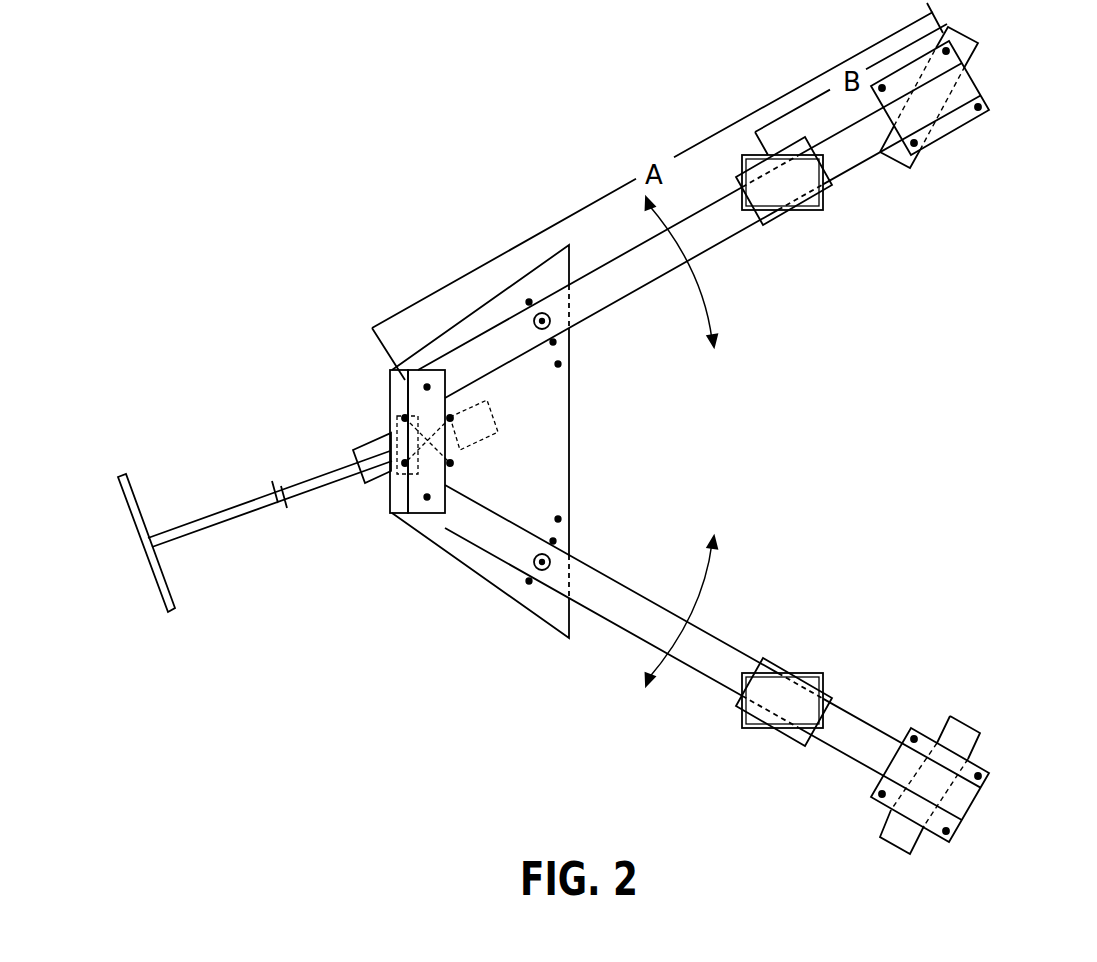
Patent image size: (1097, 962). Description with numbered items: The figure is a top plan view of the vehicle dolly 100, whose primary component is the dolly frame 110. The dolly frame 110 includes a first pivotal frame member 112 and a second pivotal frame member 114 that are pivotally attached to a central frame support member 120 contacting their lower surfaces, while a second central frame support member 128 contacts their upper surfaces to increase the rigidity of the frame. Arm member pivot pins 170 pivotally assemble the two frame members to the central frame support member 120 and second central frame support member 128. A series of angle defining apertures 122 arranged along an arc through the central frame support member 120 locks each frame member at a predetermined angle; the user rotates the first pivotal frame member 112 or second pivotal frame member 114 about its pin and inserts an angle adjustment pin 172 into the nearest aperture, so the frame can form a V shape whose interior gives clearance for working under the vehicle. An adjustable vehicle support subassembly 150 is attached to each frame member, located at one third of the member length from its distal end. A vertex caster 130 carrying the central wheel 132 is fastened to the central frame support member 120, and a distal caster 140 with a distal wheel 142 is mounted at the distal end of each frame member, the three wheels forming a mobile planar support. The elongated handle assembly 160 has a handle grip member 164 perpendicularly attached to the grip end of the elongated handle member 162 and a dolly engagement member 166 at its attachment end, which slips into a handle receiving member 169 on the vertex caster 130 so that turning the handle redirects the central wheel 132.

The dolly 100 is at (310, 172).
The dolly frame 110 is at (615, 656).
The first pivotal frame member 112 is at (710, 248).
The second pivotal frame member 114 is at (700, 674).
The central frame support member 120 is at (443, 551).
The angle defining apertures 122 is at (558, 364).
The second central frame support member 128 is at (390, 488).
The vertex caster 130 is at (392, 430).
The central wheel 132 is at (363, 443).
The distal caster 140 is at (952, 132).
The distal wheel 142 is at (975, 58).
The adjustable vehicle support subassembly 150 is at (807, 231).
The elongated handle assembly 160 is at (200, 462).
The elongated handle member 162 is at (235, 518).
The handle grip member 164 is at (150, 573).
The dolly engagement member 166 is at (450, 463).
The handle receiving member 169 is at (450, 418).
The arm member pivot pins 170 is at (427, 387).
The angle adjustment pin 172 is at (534, 322).